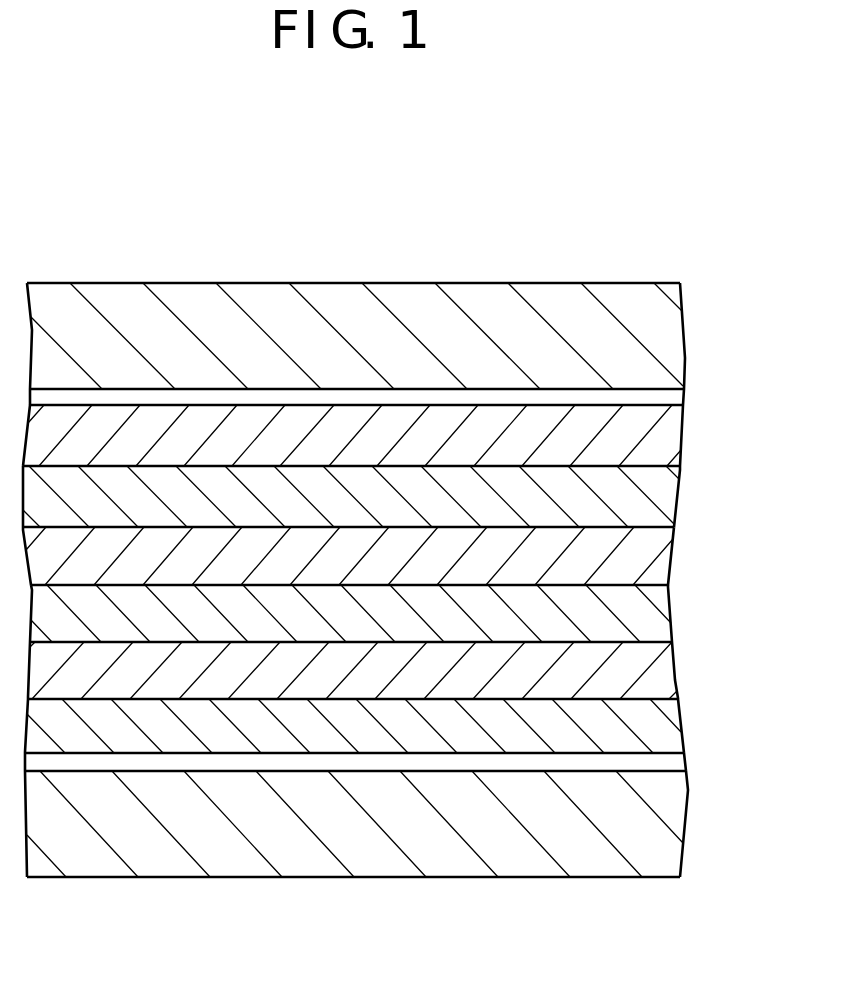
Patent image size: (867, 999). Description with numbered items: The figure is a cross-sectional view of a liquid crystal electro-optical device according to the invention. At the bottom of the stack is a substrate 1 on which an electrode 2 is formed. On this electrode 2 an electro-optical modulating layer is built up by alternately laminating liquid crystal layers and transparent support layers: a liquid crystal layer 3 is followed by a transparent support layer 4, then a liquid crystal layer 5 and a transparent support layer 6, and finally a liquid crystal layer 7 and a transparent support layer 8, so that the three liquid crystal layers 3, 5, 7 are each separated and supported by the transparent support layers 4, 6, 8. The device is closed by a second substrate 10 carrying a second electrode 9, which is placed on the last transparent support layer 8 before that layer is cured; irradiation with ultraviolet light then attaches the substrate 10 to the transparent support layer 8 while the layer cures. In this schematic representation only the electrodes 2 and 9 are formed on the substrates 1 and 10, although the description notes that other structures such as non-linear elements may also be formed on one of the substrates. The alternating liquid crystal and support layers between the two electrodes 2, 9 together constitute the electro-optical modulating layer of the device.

The substrate 1 is at (662, 322).
The electrode 2 is at (673, 402).
The liquid crystal layer 3 is at (667, 450).
The transparent support layer 4 is at (665, 505).
The liquid crystal layer 5 is at (653, 560).
The transparent support layer 6 is at (647, 617).
The liquid crystal layer 7 is at (663, 677).
The transparent support layer 8 is at (665, 728).
The second electrode 9 is at (677, 763).
The substrate 10 is at (667, 833).